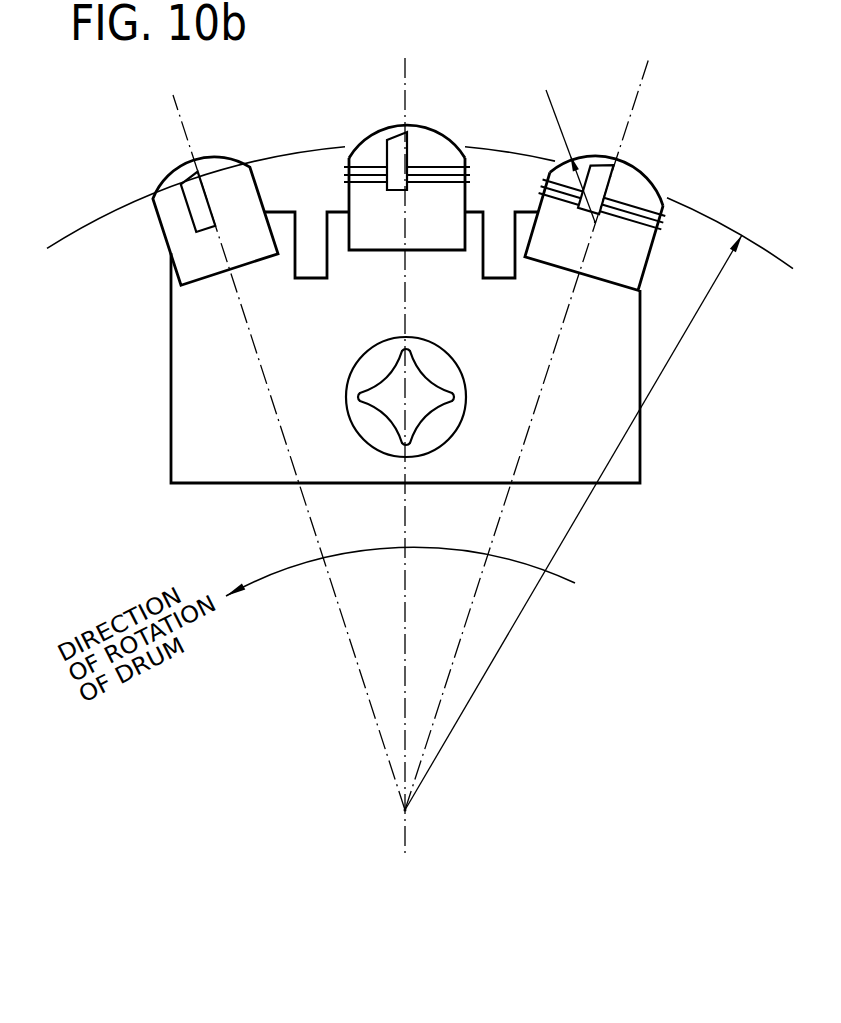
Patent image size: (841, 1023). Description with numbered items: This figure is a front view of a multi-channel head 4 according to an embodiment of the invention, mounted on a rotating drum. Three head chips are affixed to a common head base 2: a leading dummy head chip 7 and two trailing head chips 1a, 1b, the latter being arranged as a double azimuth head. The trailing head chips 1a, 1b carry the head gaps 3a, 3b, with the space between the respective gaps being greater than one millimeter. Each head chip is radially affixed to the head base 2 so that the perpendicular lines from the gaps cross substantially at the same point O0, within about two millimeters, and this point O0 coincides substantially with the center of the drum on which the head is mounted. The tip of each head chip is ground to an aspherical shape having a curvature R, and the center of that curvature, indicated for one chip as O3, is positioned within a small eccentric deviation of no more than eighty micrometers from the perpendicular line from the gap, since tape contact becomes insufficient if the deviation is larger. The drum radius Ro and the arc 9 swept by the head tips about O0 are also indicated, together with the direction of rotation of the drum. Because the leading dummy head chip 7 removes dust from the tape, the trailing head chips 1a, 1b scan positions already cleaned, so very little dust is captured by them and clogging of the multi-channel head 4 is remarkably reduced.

The head base 2 is at (228, 472).
The multi-channel head 4 is at (681, 529).
The dummy head chip 7 is at (256, 258).
The head tip locus arc 9 is at (80, 240).
The head chip 1a is at (378, 232).
The head gap 3a is at (394, 124).
The head chip 1b is at (560, 252).
The head gap 3b is at (623, 165).
The common crossing point O0 is at (432, 822).
The center of curvature O3 is at (616, 242).
The curvature of head tip R is at (570, 156).
The drum radius Ro is at (573, 522).